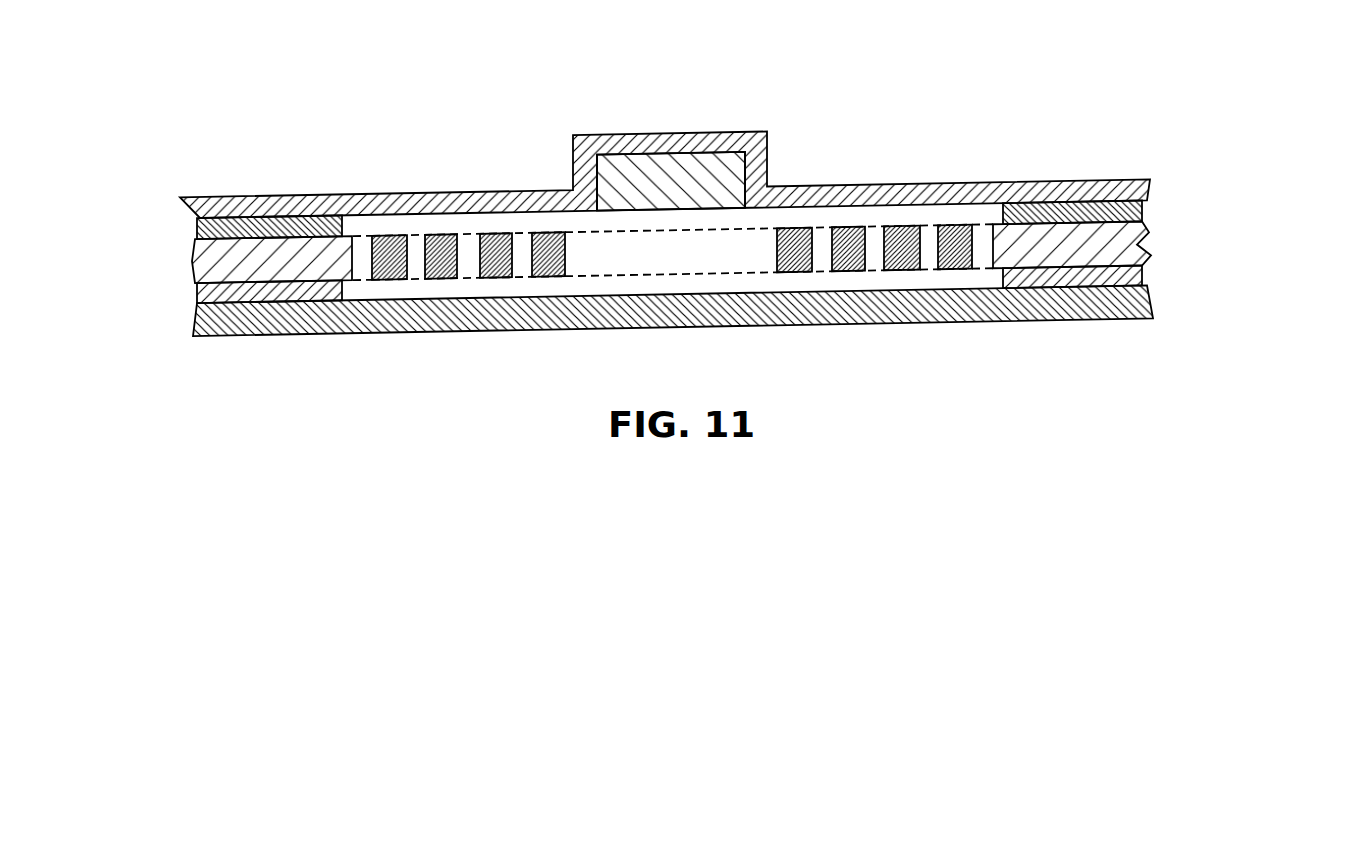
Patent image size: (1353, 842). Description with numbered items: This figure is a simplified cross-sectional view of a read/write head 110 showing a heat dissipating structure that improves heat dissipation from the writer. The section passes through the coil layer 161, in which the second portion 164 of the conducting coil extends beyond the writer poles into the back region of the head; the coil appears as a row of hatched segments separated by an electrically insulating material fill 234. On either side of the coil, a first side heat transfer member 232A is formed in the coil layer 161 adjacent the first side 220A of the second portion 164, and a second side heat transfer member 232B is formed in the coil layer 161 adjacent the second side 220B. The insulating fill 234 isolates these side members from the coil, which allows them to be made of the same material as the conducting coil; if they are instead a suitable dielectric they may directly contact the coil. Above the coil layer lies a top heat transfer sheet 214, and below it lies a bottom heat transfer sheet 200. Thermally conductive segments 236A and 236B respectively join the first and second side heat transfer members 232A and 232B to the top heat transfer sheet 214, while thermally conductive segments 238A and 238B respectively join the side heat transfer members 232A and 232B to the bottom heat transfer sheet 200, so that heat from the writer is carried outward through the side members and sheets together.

The read/write head 110 is at (680, 212).
The top heat transfer sheet 214 is at (315, 193).
The second portion of conducting coil 164 is at (466, 229).
The coil layer 161 is at (747, 262).
The electrically insulating material fill 234 is at (360, 250).
The first side of second portion of conducting coil 220A is at (357, 265).
The second side of second portion of conducting coil 220B is at (982, 257).
The thermally conductive segment 236A is at (203, 230).
The first side heat transfer member 232A is at (208, 262).
The thermally conductive segment 238A is at (208, 292).
The thermally conductive segment 236B is at (1143, 210).
The second side heat transfer member 232B is at (1140, 243).
The thermally conductive segment 238B is at (1143, 277).
The bottom heat transfer sheet 200 is at (1012, 320).